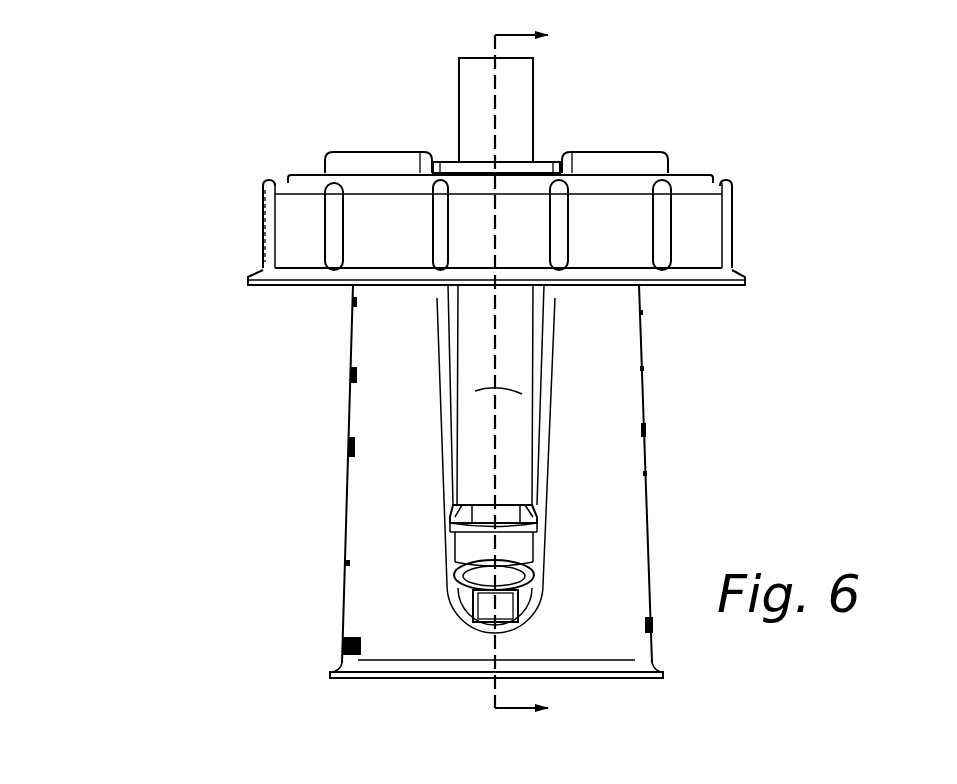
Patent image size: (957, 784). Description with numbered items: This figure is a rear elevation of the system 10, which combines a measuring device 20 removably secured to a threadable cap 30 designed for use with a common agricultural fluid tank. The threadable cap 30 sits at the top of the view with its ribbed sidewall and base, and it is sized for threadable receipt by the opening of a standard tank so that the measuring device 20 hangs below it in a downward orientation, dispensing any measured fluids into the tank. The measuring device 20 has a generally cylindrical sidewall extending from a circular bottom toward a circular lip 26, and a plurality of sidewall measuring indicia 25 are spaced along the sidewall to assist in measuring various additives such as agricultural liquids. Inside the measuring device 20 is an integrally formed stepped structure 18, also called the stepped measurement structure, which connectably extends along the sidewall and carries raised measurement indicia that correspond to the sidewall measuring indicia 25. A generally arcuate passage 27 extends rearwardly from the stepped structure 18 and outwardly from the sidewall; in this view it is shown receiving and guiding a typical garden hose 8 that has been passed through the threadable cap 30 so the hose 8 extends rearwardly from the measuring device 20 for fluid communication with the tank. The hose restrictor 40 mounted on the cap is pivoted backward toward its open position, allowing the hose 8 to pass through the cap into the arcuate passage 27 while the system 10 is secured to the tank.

The system 10 is at (116, 246).
The garden hose 8 is at (533, 107).
The hose restrictor 40 is at (522, 163).
The threadable cap 30 is at (705, 214).
The sidewall measuring indicia 25 is at (348, 378).
The measuring device 20 is at (489, 506).
The stepped structure 18 is at (509, 602).
The circular lip 26 is at (330, 674).
The arcuate passage 27 is at (486, 632).